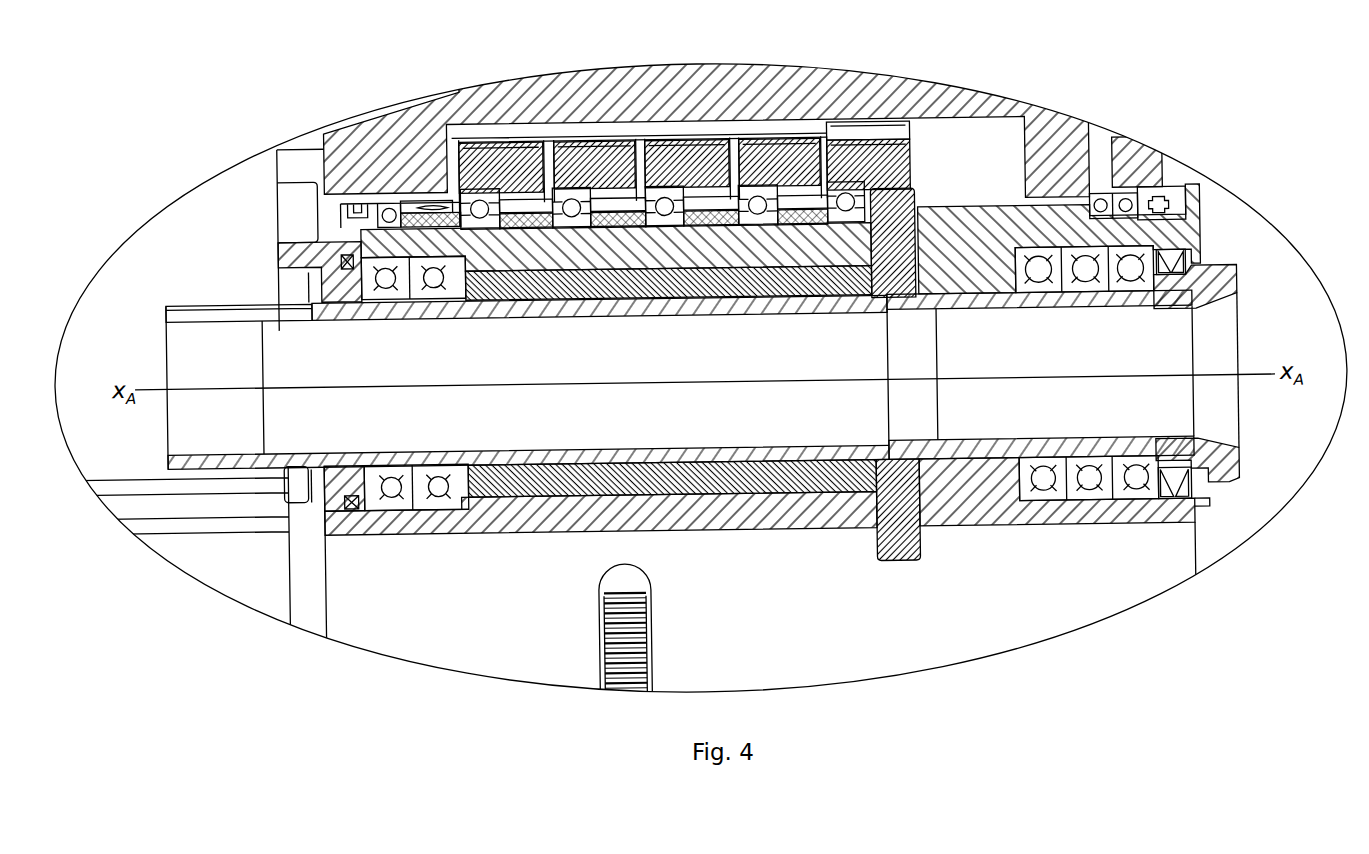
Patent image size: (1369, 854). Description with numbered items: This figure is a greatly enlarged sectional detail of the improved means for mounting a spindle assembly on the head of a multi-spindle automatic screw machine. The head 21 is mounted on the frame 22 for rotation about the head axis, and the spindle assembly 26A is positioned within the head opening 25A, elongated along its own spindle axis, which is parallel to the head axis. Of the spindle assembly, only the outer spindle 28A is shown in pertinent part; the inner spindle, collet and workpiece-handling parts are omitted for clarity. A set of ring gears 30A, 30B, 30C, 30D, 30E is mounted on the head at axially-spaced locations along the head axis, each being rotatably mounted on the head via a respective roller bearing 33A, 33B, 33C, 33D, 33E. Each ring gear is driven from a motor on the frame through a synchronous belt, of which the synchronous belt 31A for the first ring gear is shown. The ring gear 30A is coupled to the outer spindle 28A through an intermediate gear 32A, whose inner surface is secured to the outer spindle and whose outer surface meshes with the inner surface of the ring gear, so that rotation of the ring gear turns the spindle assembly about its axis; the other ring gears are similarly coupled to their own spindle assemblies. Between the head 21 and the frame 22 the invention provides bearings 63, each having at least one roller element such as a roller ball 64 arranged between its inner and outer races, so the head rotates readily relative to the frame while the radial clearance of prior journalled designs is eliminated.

The head 21 is at (680, 536).
The frame 22 is at (1080, 118).
The head opening 25A is at (1214, 518).
The spindle assembly 26A is at (1247, 261).
The outer spindle 28A is at (1238, 302).
The ring gear 30A is at (910, 161).
The ring gear 30B is at (785, 150).
The ring gear 30C is at (695, 150).
The ring gear 30D is at (600, 150).
The ring gear 30E is at (496, 149).
The synchronous belt 31A is at (862, 133).
The intermediate gear 32A is at (896, 274).
The roller bearing 33A is at (848, 235).
The roller bearing 33B is at (759, 237).
The roller bearing 33C is at (666, 237).
The roller bearing 33D is at (574, 237).
The roller bearing 33E is at (478, 237).
The bearing 63 is at (382, 189).
The roller ball 64 is at (341, 256).